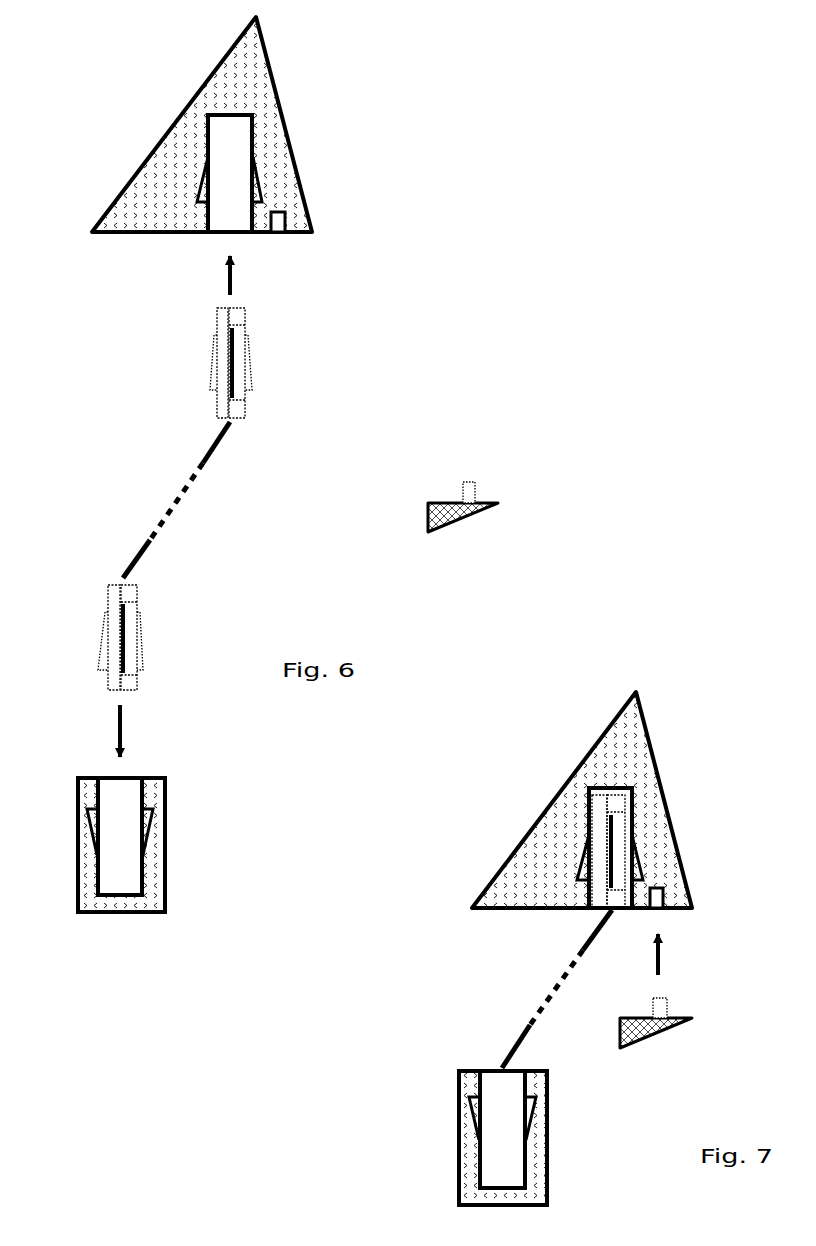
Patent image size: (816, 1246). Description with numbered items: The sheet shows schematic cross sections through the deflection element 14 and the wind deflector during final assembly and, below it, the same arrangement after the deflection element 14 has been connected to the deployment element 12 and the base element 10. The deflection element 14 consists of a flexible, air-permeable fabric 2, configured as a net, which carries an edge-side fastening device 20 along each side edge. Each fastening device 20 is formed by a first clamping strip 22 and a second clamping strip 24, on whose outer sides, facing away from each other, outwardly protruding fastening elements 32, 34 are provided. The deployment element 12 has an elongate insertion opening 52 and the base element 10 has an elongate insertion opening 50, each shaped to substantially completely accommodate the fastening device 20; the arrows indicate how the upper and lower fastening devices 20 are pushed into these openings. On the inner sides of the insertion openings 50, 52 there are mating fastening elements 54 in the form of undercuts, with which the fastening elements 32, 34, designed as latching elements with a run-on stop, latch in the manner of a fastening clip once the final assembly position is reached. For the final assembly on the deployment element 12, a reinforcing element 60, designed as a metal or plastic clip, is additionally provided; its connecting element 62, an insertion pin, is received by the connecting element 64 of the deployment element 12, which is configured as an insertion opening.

In FIG. 6, the fabric 2 is at (222, 447).
In FIG. 6, the base element 10 is at (157, 812).
In FIG. 7, the base element 10 is at (537, 1150).
In FIG. 6, the deployment element 12 is at (177, 156).
In FIG. 7, the deployment element 12 is at (650, 742).
In FIG. 6, the deflection element 14 is at (170, 499).
In FIG. 7, the deflection element 14 is at (505, 975).
In FIG. 6, the fastening device 20 is at (170, 499).
In FIG. 6, the first clamping strip 22 is at (220, 330).
In FIG. 6, the second clamping strip 24 is at (240, 360).
In FIG. 6, the fastening element 32 is at (212, 376).
In FIG. 6, the fastening element 34 is at (252, 386).
In FIG. 6, the insertion opening 50 is at (135, 800).
In FIG. 6, the insertion opening 52 is at (242, 218).
In FIG. 6, the mating fastening element 54 is at (262, 201).
In FIG. 6, the reinforcing element 60 is at (422, 498).
In FIG. 7, the reinforcing element 60 is at (643, 1040).
In FIG. 6, the connecting element 62 is at (463, 491).
In FIG. 6, the connecting element 64 is at (278, 232).